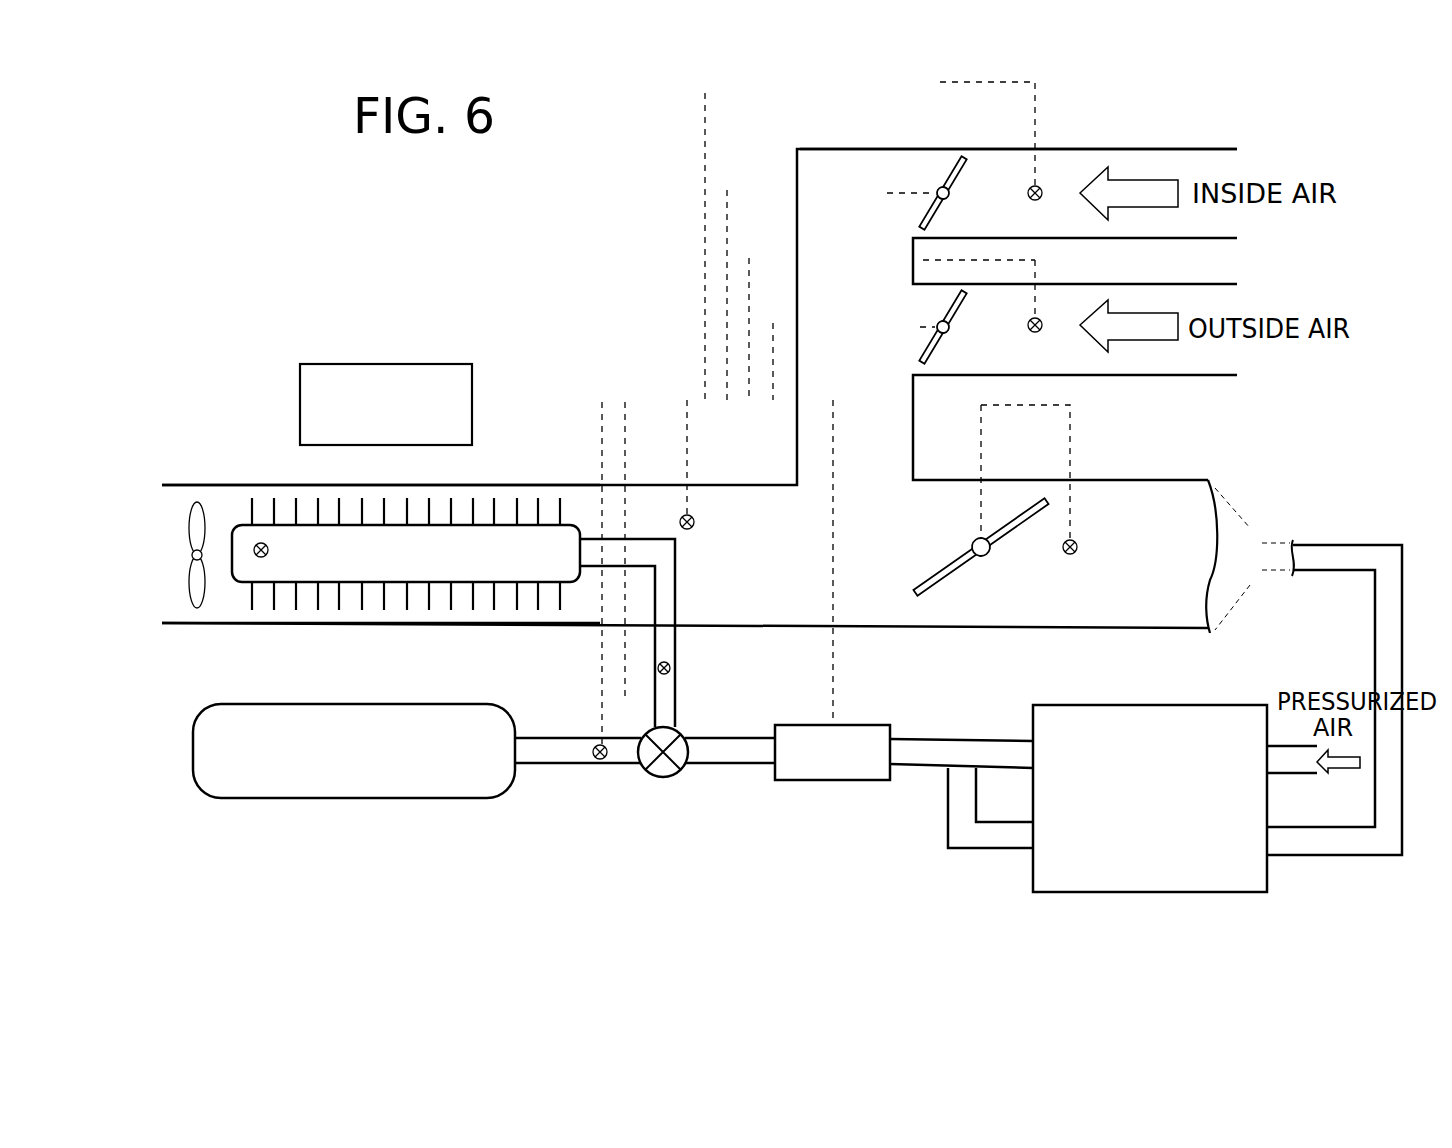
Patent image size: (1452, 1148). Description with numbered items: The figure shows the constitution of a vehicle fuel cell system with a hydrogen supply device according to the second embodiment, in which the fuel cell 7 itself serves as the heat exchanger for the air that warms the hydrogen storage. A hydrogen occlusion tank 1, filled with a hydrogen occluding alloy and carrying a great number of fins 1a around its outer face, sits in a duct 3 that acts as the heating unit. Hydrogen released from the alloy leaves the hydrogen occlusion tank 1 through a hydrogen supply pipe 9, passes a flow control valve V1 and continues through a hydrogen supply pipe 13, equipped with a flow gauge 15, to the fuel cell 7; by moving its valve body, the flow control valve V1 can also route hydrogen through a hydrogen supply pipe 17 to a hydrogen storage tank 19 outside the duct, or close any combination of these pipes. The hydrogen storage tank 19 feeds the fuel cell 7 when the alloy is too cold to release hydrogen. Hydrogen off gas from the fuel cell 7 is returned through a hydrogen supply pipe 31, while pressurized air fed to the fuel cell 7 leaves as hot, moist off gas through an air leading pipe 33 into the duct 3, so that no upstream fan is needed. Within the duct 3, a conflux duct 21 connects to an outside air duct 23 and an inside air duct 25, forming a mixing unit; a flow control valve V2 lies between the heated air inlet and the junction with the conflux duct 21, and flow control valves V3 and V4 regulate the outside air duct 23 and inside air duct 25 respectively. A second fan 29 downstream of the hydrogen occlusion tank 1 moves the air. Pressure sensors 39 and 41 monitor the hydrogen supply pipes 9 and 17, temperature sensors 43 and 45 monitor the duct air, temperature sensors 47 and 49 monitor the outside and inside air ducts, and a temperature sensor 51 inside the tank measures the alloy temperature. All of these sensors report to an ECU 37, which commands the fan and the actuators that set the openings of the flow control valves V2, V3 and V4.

The hydrogen occlusion tank 1 is at (406, 587).
The fins 1a is at (360, 590).
The duct 3 is at (783, 628).
The fuel cell 7 is at (1245, 700).
The hydrogen supply pipe 9 is at (659, 633).
The hydrogen supply pipe 13 is at (745, 765).
The flow gauge 15 is at (835, 782).
The hydrogen supply pipe 17 is at (555, 770).
The hydrogen storage tank 19 is at (354, 789).
The conflux duct 21 is at (977, 427).
The outside air duct 23 is at (1220, 284).
The inside air duct 25 is at (1160, 149).
The second fan 29 is at (381, 523).
The hydrogen supply pipe 31 is at (980, 850).
The air leading pipe 33 is at (1375, 612).
The ECU 37 is at (386, 364).
The pressure sensor 39 is at (702, 656).
The pressure sensor 41 is at (590, 740).
The temperature sensor 43 is at (742, 522).
The temperature sensor 45 is at (1070, 556).
The temperature sensor 47 is at (1040, 333).
The temperature sensor 49 is at (1040, 200).
The temperature sensor 51 is at (252, 605).
The flow control valve V1 is at (665, 790).
The flow control valve V2 is at (967, 568).
The flow control valve V3 is at (955, 318).
The flow control valve V4 is at (955, 183).